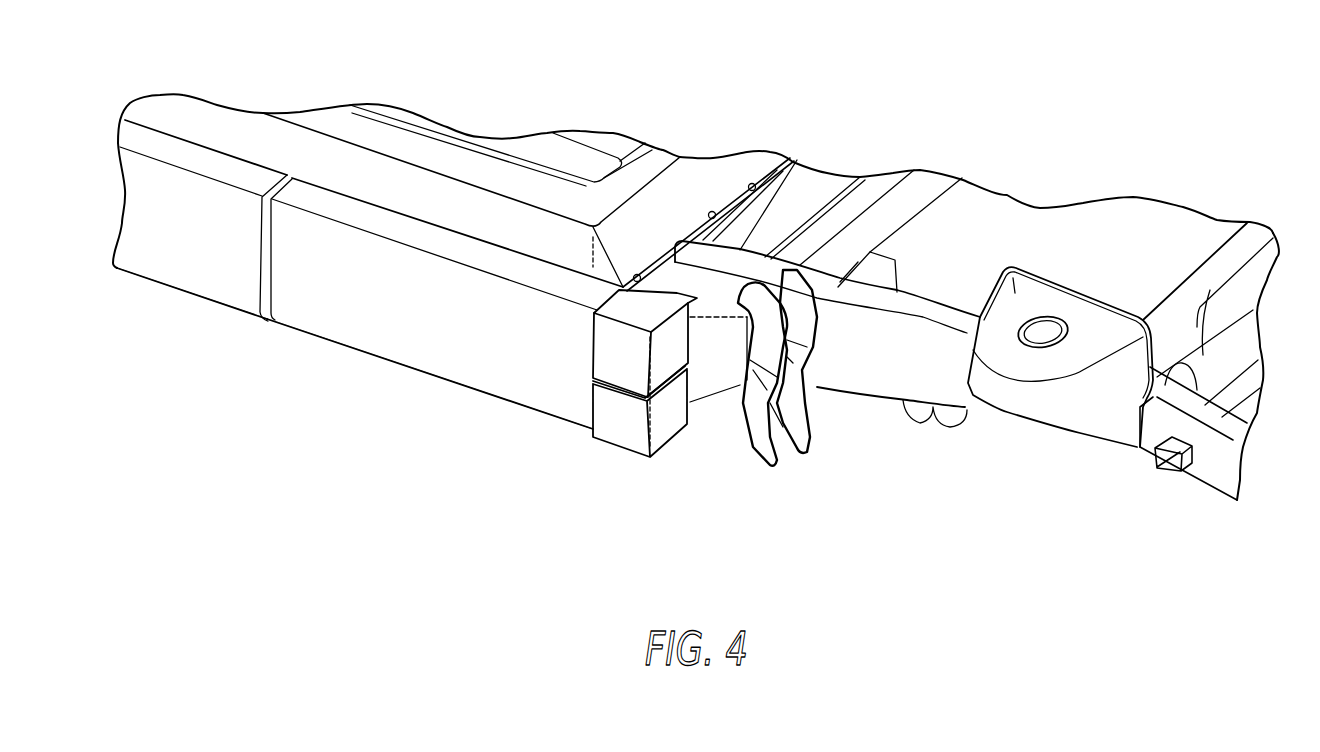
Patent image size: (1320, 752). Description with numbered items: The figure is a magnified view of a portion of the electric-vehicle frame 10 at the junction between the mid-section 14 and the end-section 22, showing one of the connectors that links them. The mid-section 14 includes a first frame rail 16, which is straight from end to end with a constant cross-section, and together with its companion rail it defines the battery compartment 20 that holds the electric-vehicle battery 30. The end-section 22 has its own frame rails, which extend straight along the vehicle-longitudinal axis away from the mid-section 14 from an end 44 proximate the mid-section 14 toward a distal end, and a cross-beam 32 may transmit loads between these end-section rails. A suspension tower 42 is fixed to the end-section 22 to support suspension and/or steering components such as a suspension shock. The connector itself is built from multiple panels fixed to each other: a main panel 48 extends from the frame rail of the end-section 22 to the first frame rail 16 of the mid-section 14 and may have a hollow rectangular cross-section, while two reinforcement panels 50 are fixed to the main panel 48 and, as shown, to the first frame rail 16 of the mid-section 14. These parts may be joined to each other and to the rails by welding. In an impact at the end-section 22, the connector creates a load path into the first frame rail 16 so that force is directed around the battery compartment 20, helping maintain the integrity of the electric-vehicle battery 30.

The vehicle frame 10 is at (293, 413).
The mid-section 14 is at (173, 308).
The first frame rail 16 is at (470, 363).
The battery compartment 20 is at (689, 191).
The end-section 22 is at (1173, 500).
The electric-vehicle battery 30 is at (580, 162).
The cross-beam 32 is at (912, 202).
The suspension tower 42 is at (1060, 360).
The end 44 is at (738, 256).
The main panel 48 is at (707, 378).
The reinforcement panel 50 is at (622, 418).